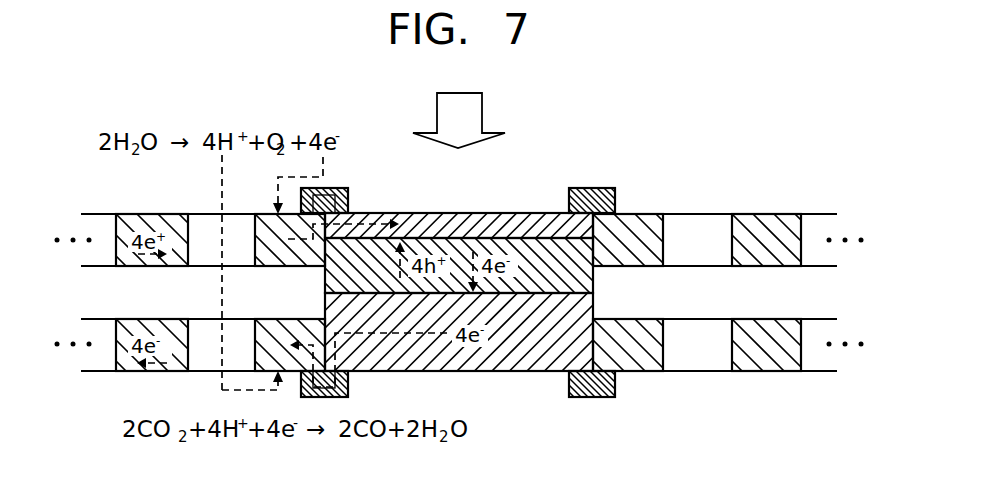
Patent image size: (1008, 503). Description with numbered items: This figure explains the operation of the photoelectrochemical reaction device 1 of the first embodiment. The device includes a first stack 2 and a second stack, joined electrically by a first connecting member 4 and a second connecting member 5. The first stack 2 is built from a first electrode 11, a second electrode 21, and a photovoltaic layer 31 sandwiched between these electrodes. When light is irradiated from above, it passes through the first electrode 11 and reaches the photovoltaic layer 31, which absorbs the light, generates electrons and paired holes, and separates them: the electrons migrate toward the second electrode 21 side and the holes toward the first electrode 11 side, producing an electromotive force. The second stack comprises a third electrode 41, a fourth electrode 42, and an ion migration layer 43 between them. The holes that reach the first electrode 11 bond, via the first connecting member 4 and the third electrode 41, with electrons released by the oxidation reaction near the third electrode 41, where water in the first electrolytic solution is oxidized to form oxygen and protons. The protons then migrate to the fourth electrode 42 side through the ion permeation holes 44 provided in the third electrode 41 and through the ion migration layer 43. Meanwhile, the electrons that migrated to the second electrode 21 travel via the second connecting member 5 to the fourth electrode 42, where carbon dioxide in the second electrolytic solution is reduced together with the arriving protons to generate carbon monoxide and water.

The photoelectrochemical reaction device 1 is at (733, 137).
The first stack 2 is at (459, 269).
The first connecting member 4 is at (590, 188).
The second connecting member 5 is at (591, 398).
The first electrode 11 is at (478, 225).
The second electrode 21 is at (506, 360).
The photovoltaic layer 31 is at (513, 247).
The third electrode 41 is at (760, 225).
The fourth electrode 42 is at (763, 360).
The ion migration layer 43 is at (780, 292).
The ion permeation holes 44 is at (690, 224).